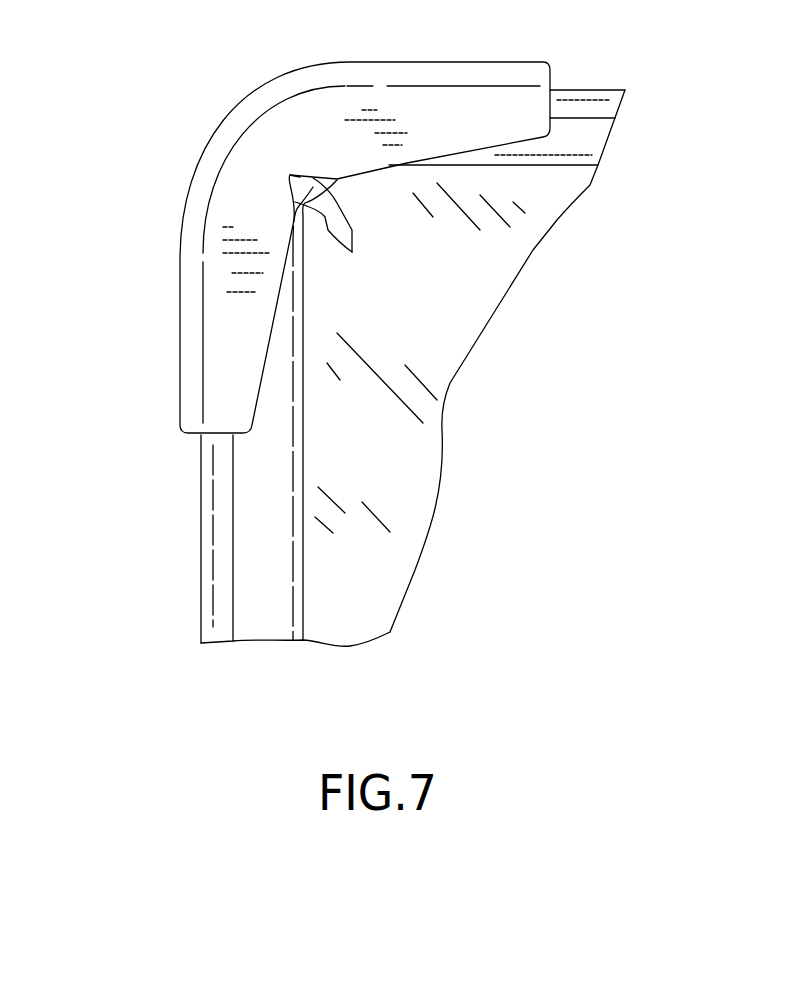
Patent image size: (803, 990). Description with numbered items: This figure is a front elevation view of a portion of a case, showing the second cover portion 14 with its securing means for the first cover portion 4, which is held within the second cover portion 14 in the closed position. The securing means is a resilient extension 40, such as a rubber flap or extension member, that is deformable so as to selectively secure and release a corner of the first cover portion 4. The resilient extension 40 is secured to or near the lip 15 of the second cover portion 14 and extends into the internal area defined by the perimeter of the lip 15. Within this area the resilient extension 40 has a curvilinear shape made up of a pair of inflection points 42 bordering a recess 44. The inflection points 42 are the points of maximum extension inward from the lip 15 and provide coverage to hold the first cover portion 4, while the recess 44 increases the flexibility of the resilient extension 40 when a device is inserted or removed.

The first cover portion 4 is at (585, 180).
The second cover portion 14 is at (162, 505).
The lip 15 is at (583, 107).
The resilient extension 40 is at (156, 93).
The inflection points 42 is at (336, 235).
The recess 44 is at (297, 182).